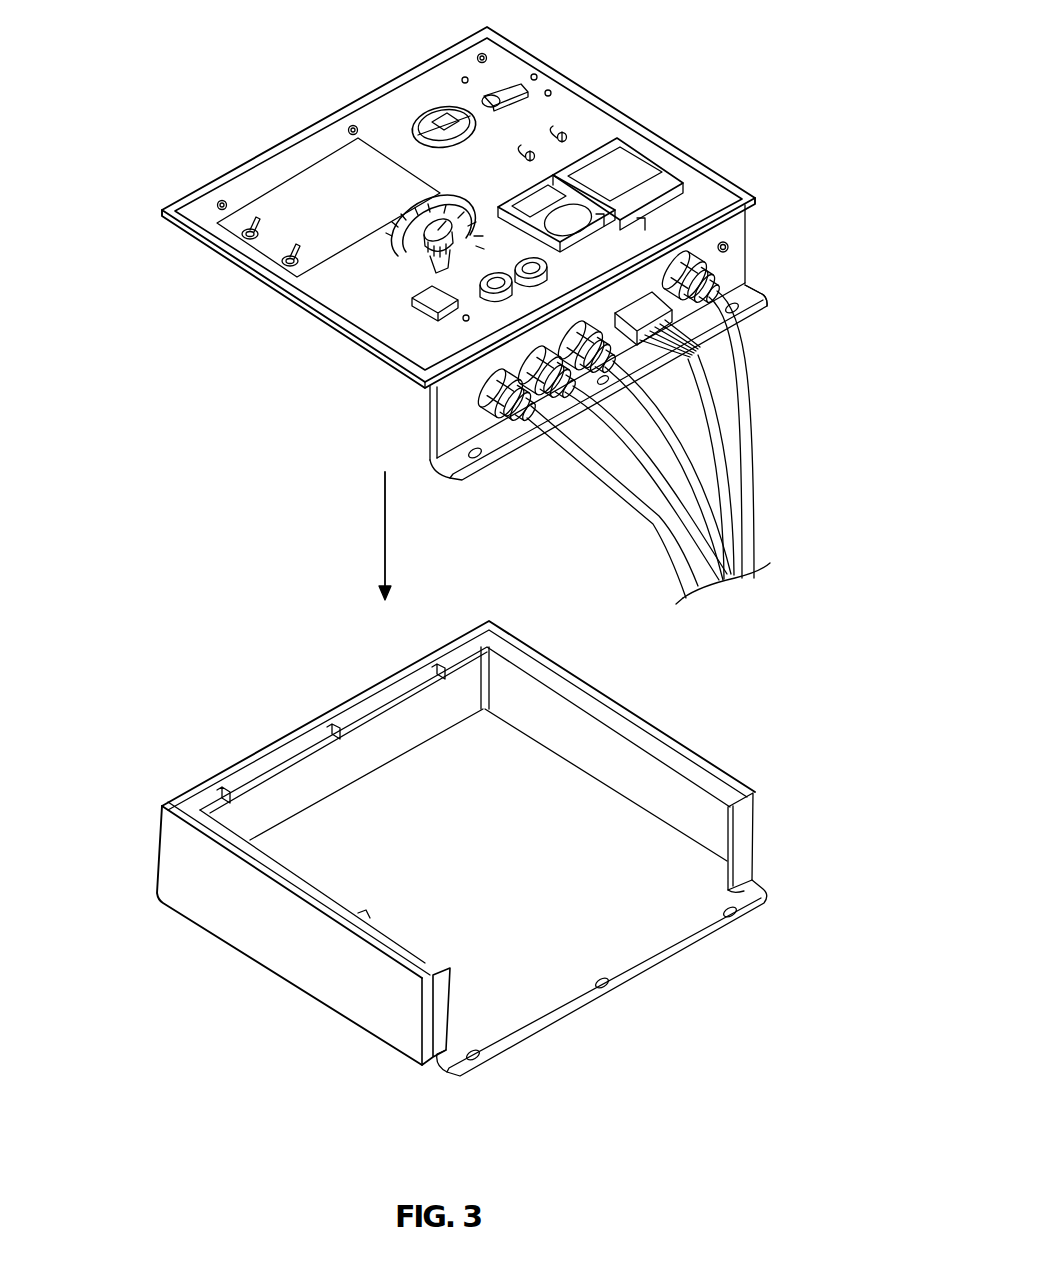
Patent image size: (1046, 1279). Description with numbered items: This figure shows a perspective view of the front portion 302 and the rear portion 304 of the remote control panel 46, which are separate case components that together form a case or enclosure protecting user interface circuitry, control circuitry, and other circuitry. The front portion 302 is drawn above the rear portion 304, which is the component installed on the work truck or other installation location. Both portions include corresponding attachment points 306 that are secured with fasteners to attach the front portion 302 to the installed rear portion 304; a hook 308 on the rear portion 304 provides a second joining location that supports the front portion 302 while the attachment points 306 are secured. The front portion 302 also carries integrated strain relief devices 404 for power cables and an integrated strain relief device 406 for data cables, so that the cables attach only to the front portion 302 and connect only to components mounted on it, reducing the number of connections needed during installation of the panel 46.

The remote control panel 46 is at (136, 64).
The front portion 302 is at (157, 217).
The rear portion 304 is at (160, 812).
The attachment points 306 is at (468, 451).
The hook 308 is at (342, 722).
The integrated strain relief devices 404 is at (785, 247).
The integrated strain relief device 406 is at (657, 295).